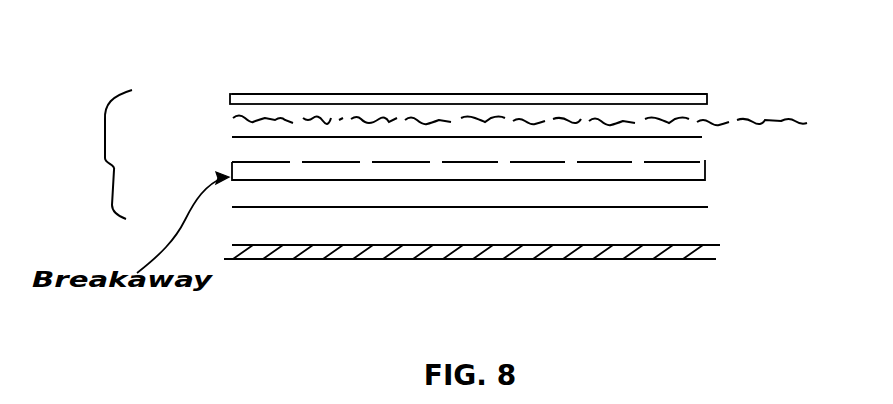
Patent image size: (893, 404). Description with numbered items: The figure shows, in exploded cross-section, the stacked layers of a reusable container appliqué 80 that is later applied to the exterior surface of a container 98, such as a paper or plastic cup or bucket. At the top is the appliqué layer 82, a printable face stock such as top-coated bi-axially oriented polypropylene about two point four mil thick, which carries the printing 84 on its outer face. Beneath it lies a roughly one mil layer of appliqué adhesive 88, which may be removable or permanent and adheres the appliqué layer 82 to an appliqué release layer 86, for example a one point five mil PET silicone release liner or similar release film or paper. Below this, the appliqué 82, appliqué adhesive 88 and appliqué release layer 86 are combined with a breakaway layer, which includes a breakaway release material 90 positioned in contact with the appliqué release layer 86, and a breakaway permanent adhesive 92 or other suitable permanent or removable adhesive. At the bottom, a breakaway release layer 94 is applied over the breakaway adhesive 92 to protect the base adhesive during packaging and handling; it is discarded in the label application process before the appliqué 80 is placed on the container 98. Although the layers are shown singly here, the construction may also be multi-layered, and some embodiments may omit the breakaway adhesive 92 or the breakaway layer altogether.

The container appliqué 80 is at (89, 154).
The appliqué layer 82 is at (707, 100).
The printing 84 is at (602, 90).
The appliqué release layer 86 is at (702, 138).
The appliqué adhesive 88 is at (707, 117).
The breakaway release material 90 is at (703, 162).
The breakaway permanent adhesive 92 is at (695, 182).
The breakaway release layer 94 is at (677, 208).
The container 98 is at (681, 266).